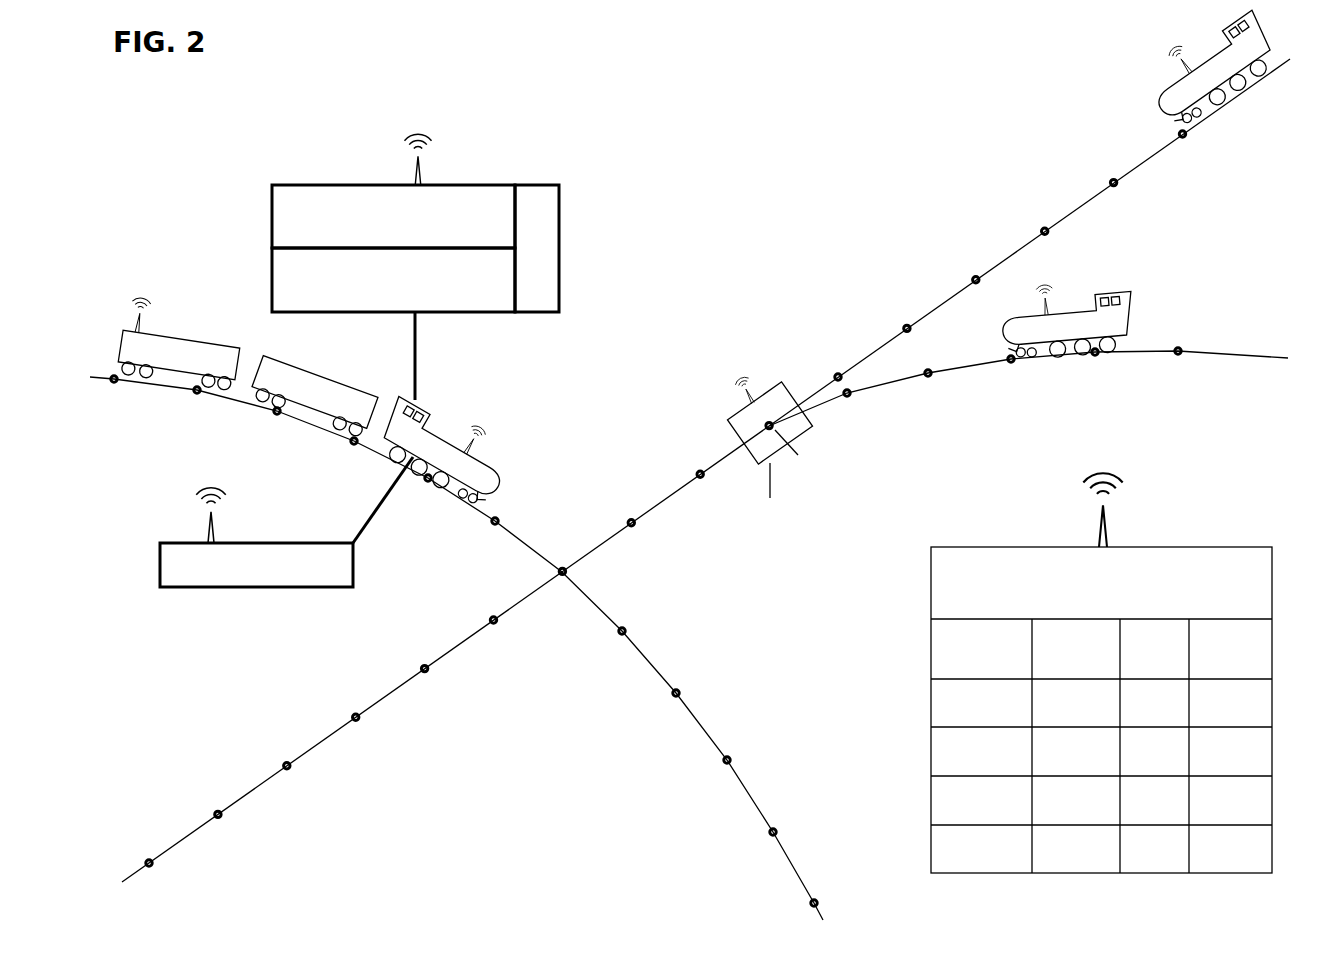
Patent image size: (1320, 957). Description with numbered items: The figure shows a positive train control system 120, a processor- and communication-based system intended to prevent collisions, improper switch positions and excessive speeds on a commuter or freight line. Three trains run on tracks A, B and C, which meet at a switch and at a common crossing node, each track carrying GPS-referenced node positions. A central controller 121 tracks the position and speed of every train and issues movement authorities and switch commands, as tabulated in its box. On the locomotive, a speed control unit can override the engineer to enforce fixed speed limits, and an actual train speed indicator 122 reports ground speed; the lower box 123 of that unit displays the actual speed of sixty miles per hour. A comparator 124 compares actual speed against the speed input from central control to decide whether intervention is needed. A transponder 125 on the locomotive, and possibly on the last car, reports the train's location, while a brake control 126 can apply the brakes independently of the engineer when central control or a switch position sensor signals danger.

The positive train control system 120 is at (667, 130).
The central controller 121 is at (1222, 553).
The actual train speed indicator 122 is at (280, 207).
The actual train speed unit 123 is at (280, 287).
The comparator 124 is at (553, 217).
The transponder 125 is at (137, 322).
The brake control 126 is at (168, 550).